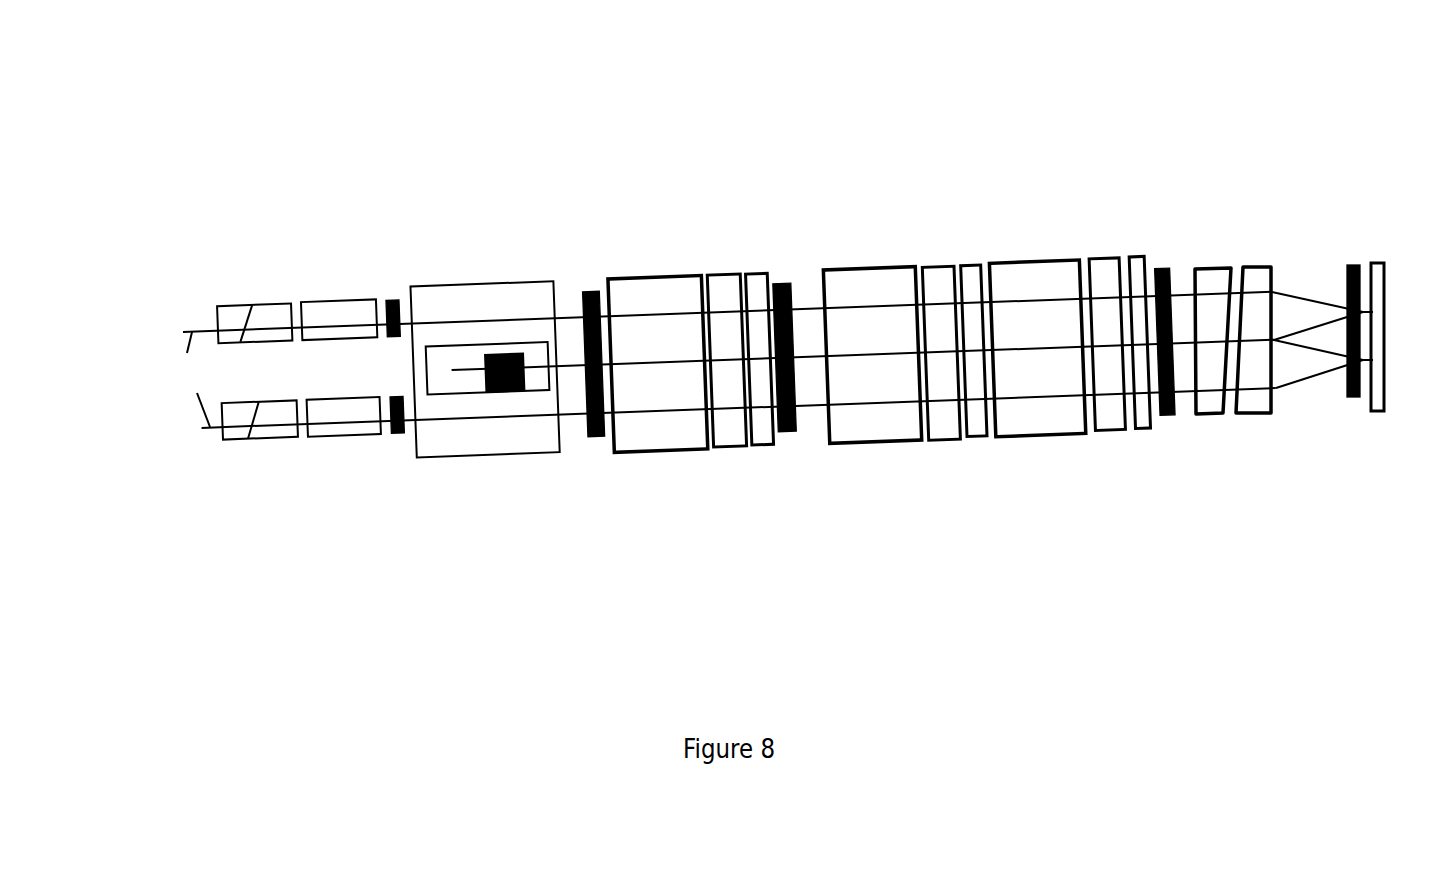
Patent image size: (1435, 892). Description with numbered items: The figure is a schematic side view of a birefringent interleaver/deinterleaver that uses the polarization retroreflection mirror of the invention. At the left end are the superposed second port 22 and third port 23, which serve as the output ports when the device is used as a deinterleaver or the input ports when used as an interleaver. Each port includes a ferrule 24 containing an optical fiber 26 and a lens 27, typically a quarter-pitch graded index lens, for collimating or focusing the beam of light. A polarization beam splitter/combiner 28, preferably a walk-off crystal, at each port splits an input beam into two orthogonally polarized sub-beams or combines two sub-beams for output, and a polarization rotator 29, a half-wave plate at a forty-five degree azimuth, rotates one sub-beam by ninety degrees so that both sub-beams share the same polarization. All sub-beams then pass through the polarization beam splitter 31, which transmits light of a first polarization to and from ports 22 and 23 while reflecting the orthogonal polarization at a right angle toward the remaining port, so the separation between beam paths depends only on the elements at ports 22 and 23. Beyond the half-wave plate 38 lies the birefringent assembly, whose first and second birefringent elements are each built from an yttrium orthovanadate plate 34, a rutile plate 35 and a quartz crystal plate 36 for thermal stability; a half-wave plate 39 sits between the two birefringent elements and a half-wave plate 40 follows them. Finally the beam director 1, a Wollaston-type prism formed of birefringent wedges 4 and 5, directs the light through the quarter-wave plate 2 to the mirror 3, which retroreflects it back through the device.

The beam director 1 is at (1215, 220).
The quarter-wave plate 2 is at (1348, 263).
The mirror 3 is at (1385, 413).
The birefringent wedge 4 is at (1208, 415).
The birefringent wedge 5 is at (1268, 413).
The second port 22 is at (217, 258).
The third port 23 is at (225, 478).
The ferrule 24 is at (230, 305).
The optical fiber 26 is at (191, 379).
The lens 27 is at (278, 303).
The polarization beam splitter/combiner 28 is at (350, 302).
The polarization rotator 29 is at (400, 303).
The polarization beam splitter 31 is at (470, 285).
The yttrium orthovanadate plate 34 is at (1023, 263).
The rutile plate 35 is at (725, 277).
The quartz crystal plate 36 is at (1132, 260).
The half-wave plate 38 is at (590, 290).
The half-wave plate 39 is at (783, 283).
The half-wave plate 40 is at (1162, 415).